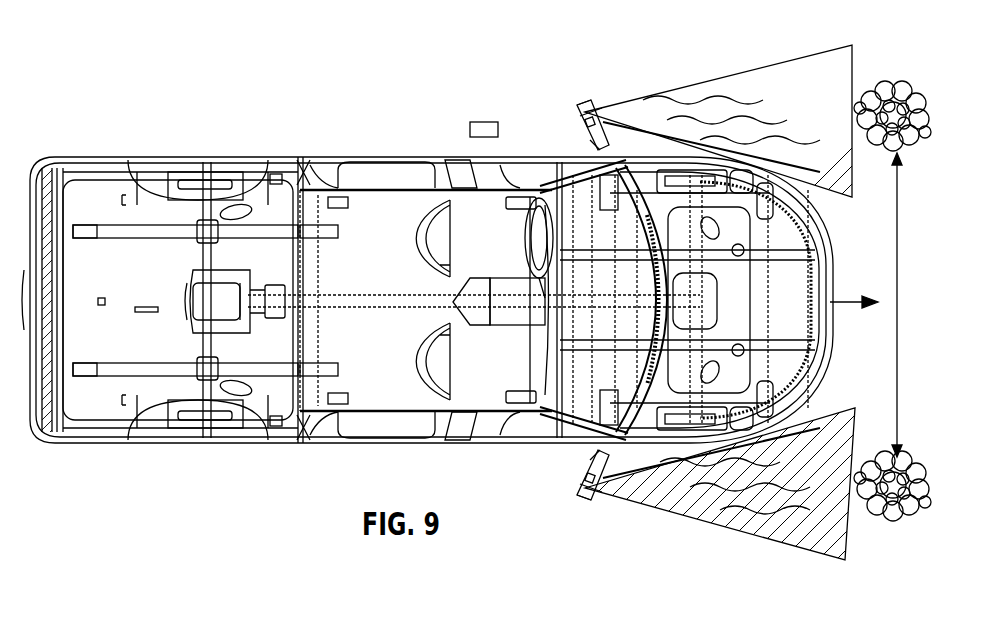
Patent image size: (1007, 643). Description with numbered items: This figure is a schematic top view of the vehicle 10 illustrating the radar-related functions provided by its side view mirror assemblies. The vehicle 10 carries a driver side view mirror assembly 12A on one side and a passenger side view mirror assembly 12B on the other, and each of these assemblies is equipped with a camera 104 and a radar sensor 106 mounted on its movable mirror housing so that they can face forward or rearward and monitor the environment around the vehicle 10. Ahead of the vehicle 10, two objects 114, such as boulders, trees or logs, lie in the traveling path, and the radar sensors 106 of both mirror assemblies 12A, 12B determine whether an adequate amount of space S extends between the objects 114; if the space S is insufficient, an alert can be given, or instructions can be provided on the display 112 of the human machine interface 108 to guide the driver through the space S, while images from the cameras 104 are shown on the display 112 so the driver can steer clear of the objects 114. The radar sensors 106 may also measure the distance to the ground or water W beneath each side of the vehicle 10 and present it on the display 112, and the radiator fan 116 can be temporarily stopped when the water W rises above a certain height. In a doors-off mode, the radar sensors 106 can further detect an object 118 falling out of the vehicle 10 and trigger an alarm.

The vehicle 10 is at (352, 142).
The driver side view mirror assembly 12A is at (583, 96).
The passenger side view mirror assembly 12B is at (578, 506).
The camera 104 is at (585, 118).
The radar sensor 106 is at (604, 100).
The human machine interface 108 is at (524, 268).
The display 112 is at (505, 320).
The object 114 is at (892, 92).
The radiator fan 116 is at (832, 262).
The object 118 is at (481, 120).
The water W is at (750, 78).
The space s is at (904, 305).